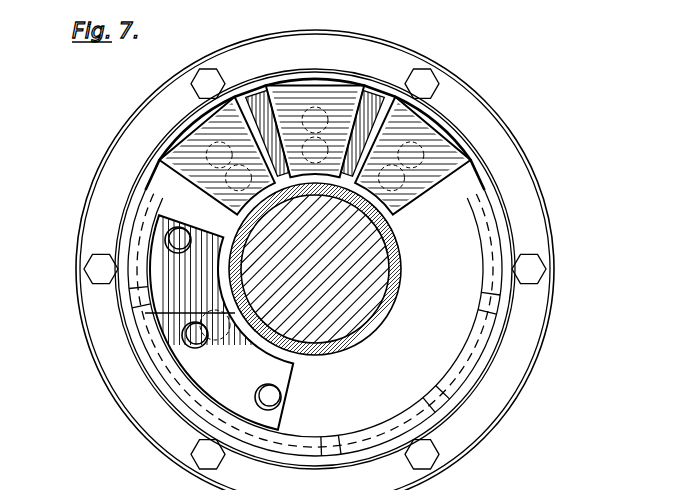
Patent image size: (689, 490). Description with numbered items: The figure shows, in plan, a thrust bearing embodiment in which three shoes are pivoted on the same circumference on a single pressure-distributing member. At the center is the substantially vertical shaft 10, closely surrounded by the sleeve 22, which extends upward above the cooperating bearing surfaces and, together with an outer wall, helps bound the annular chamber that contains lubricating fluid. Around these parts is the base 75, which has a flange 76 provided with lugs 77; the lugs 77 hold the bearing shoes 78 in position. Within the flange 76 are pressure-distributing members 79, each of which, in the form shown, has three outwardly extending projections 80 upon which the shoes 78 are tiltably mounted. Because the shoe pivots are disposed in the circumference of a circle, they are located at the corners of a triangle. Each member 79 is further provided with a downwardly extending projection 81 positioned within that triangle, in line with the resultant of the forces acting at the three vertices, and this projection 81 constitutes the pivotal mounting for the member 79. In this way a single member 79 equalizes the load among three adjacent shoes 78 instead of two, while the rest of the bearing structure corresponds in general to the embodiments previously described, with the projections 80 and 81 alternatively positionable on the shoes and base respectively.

The shaft 10 is at (369, 265).
The sleeve 22 is at (398, 301).
The base 75 is at (545, 188).
The flange 76 is at (502, 325).
The lugs 77 is at (373, 93).
The bearing shoes 78 is at (341, 80).
The pressure-distributing members 79 is at (233, 196).
The outwardly extending projections 80 is at (258, 387).
The downwardly extending projection 81 is at (145, 313).